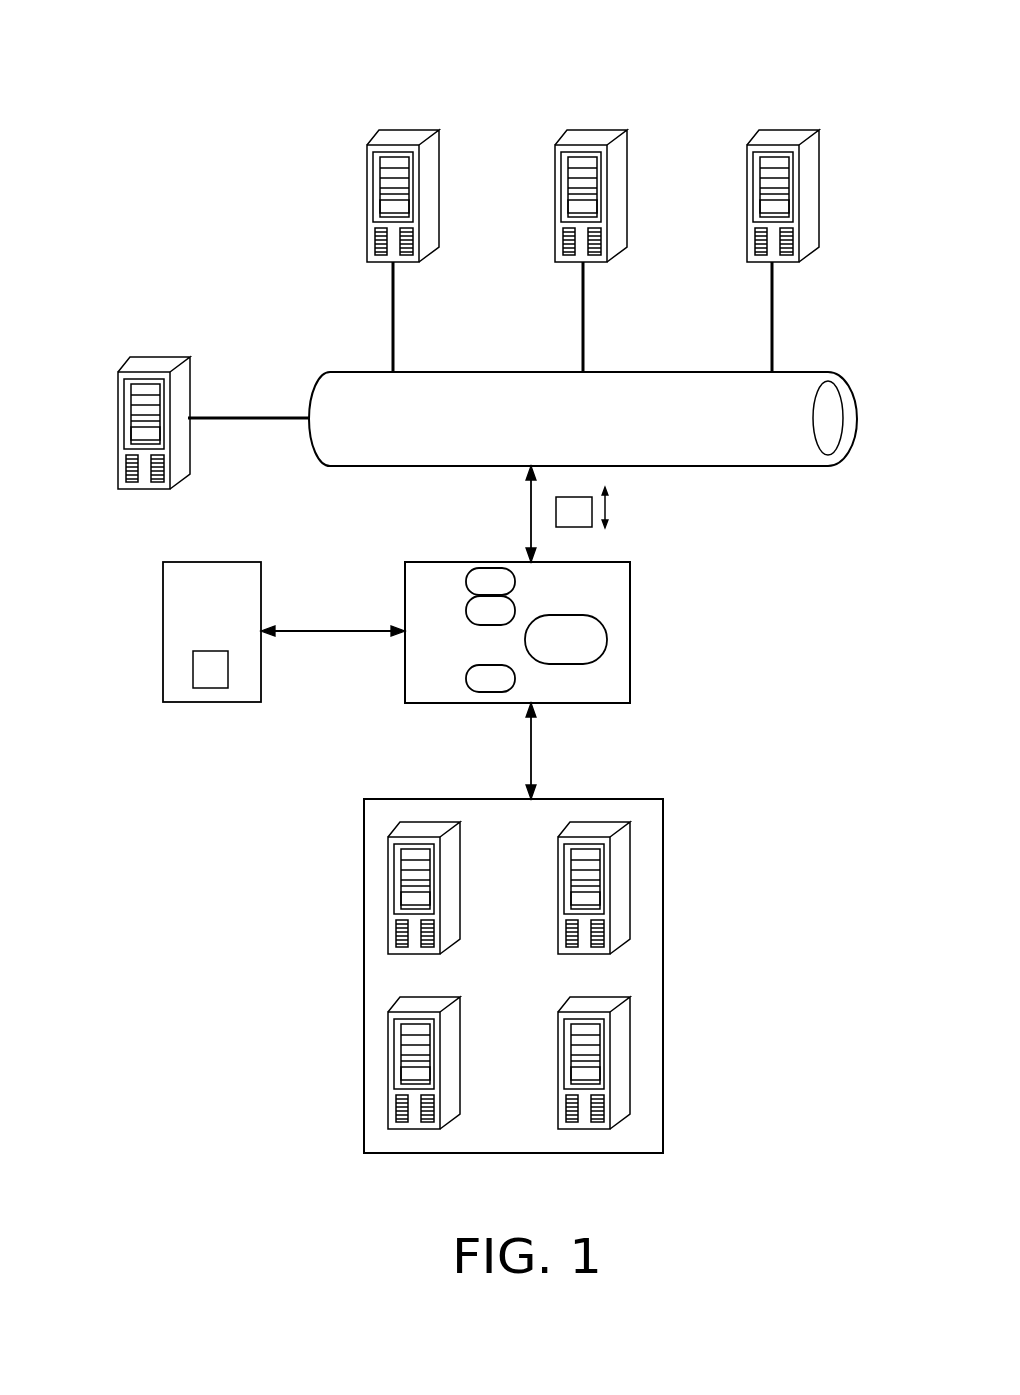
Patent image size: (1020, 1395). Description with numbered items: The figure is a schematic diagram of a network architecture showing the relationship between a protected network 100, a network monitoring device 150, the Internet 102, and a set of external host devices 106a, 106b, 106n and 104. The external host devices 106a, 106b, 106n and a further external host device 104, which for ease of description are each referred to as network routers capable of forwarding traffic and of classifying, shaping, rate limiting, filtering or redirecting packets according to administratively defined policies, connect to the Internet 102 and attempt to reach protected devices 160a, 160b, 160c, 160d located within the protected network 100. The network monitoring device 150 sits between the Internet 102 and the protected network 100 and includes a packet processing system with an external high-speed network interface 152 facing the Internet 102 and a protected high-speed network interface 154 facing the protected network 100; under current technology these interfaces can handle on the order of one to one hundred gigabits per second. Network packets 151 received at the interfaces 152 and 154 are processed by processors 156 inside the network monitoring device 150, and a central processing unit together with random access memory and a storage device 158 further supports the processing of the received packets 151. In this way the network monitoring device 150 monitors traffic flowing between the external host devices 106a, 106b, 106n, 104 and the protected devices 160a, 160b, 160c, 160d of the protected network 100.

The protected network 100 is at (640, 797).
The Internet 102 is at (812, 372).
The external host device 104 is at (163, 357).
The external host device 106a is at (413, 130).
The external host device 106b is at (601, 130).
The external host device 106n is at (794, 130).
The network monitoring device 150 is at (548, 616).
The network packets 151 is at (572, 497).
The external high-speed network interface 152 is at (495, 568).
The protected high-speed network interface 154 is at (487, 692).
The processors 156 is at (466, 608).
The storage device 158 is at (163, 598).
The protected device 160a is at (388, 888).
The protected device 160b is at (388, 1068).
The protected device 160c is at (629, 873).
The protected device 160d is at (629, 1053).